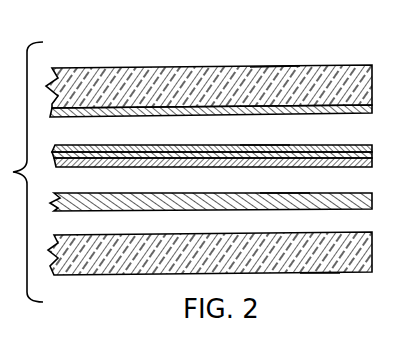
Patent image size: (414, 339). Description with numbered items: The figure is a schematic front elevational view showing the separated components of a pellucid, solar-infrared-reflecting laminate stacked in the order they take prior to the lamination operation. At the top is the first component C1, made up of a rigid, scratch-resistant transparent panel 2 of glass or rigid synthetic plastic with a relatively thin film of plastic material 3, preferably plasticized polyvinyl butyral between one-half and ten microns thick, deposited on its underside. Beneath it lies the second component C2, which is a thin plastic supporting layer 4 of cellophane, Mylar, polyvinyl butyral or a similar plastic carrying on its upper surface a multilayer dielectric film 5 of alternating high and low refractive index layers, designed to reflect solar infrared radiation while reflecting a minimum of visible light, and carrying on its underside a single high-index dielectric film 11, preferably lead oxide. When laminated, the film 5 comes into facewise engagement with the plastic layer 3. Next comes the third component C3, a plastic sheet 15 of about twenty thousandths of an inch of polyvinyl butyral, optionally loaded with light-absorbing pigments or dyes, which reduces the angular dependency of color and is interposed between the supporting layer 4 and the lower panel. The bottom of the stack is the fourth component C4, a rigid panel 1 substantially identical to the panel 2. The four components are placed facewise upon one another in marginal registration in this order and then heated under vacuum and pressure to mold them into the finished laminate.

The rigid panel 1 is at (372, 257).
The rigid panel 2 is at (354, 65).
The thin film of plastic material 3 is at (372, 110).
The thin plastic supporting layer 4 is at (372, 154).
The multilayer dielectric film 5 is at (372, 146).
The single dielectric film 11 is at (372, 161).
The plastic sheet 15 is at (372, 206).
The first component C1 is at (274, 62).
The second component C2 is at (263, 141).
The third component C3 is at (281, 190).
The fourth component C4 is at (318, 276).